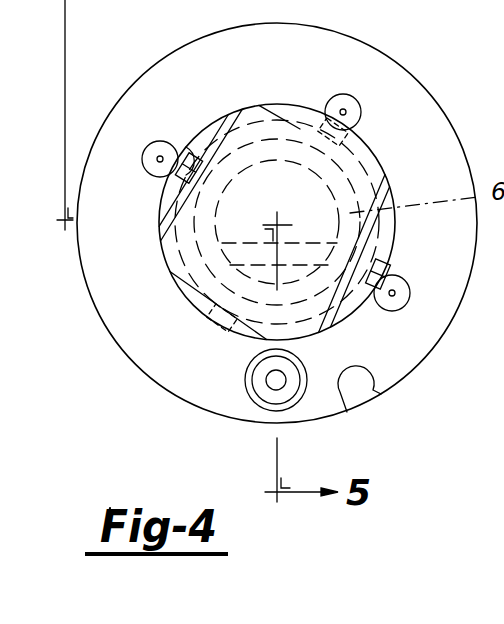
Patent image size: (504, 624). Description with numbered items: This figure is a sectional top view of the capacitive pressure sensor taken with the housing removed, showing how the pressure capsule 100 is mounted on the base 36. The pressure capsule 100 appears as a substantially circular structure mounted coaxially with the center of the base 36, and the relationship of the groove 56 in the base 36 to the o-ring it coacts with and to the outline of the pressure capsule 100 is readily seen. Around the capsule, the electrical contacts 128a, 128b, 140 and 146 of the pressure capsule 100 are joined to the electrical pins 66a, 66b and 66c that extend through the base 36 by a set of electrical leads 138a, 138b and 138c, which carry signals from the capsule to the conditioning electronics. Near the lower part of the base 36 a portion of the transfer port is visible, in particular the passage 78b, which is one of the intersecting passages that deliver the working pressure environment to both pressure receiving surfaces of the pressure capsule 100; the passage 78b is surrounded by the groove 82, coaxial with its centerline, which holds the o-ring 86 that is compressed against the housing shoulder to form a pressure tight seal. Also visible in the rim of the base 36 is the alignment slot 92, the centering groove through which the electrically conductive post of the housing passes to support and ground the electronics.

The base 36 is at (503, 87).
The groove 56 is at (403, 185).
The electrical pin 66a is at (392, 293).
The electrical pin 66b is at (343, 112).
The electrical pin 66c is at (160, 159).
The passage 78b is at (283, 386).
The groove 82 is at (305, 368).
The o-ring 86 is at (268, 398).
The centering groove 92 is at (360, 407).
The pressure capsule 100 is at (384, 163).
The electrical contact 128a is at (323, 107).
The electrical contact 128b is at (218, 325).
The electrical lead 138a is at (408, 273).
The electrical lead 138b is at (361, 121).
The electrical lead 138c is at (178, 140).
The electrical contact 140 is at (390, 268).
The electrical contact 146 is at (238, 82).